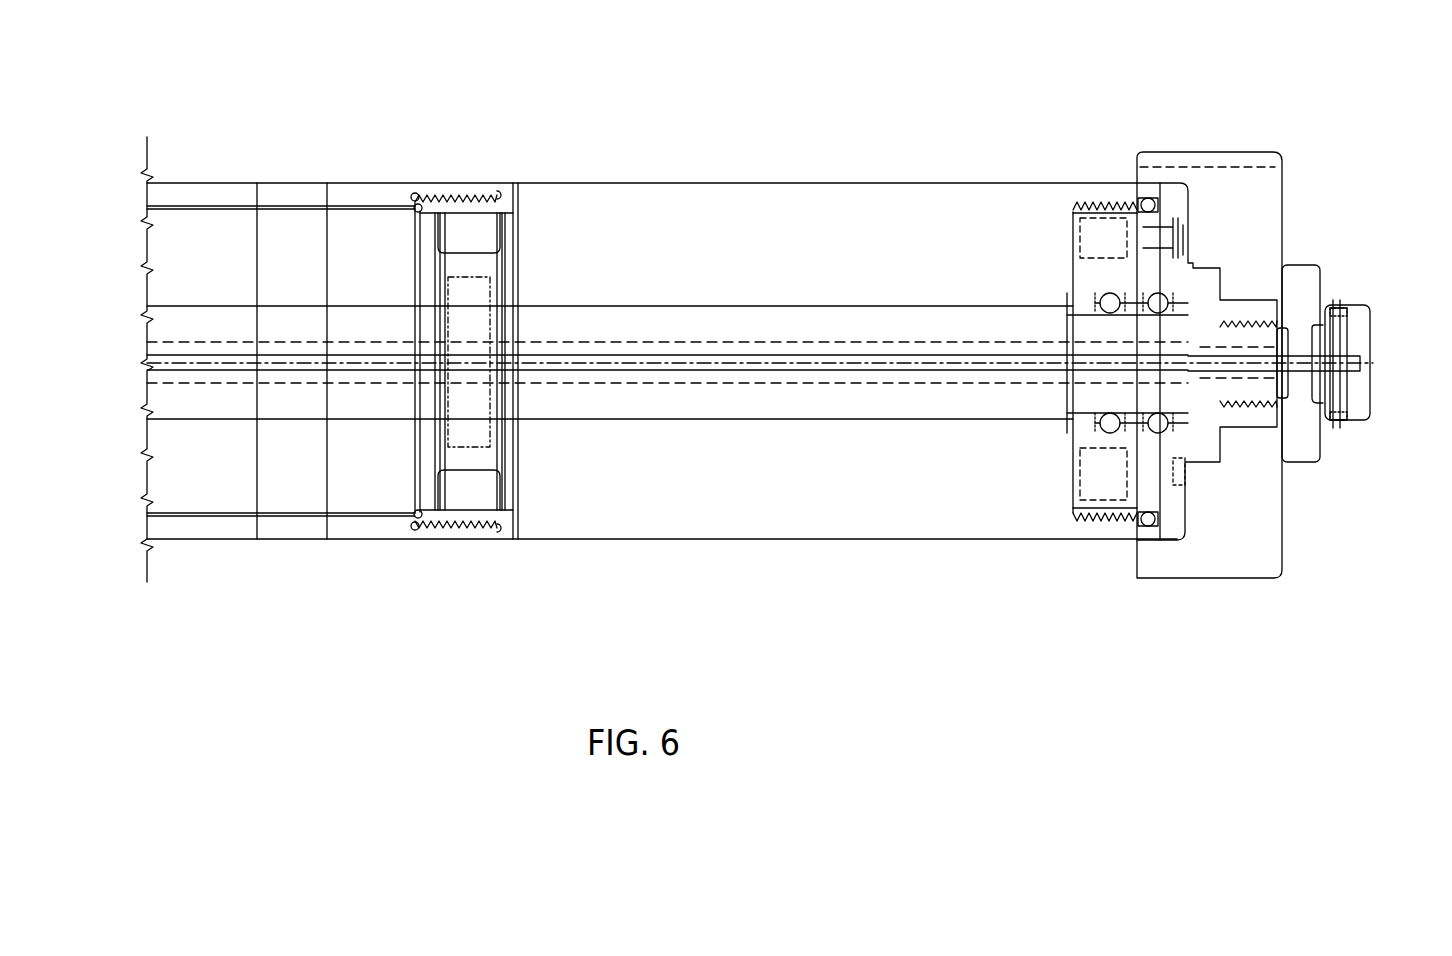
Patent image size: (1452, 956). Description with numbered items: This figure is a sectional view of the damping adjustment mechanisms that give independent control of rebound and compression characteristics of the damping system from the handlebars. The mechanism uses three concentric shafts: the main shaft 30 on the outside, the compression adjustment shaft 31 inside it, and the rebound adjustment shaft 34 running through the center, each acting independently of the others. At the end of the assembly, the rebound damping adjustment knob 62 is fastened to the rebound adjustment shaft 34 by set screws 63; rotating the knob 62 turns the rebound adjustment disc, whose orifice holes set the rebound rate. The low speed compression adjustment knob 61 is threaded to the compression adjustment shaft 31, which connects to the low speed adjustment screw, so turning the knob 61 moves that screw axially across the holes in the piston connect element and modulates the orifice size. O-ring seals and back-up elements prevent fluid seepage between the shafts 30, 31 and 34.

The main shaft 30 is at (357, 237).
The compression adjustment shaft 31 is at (606, 323).
The rebound adjustment shaft 34 is at (737, 382).
The low speed compression adjustment knob 61 is at (1292, 462).
The rebound damping adjustment knob 62 is at (1352, 428).
The set screws 63 is at (1358, 395).